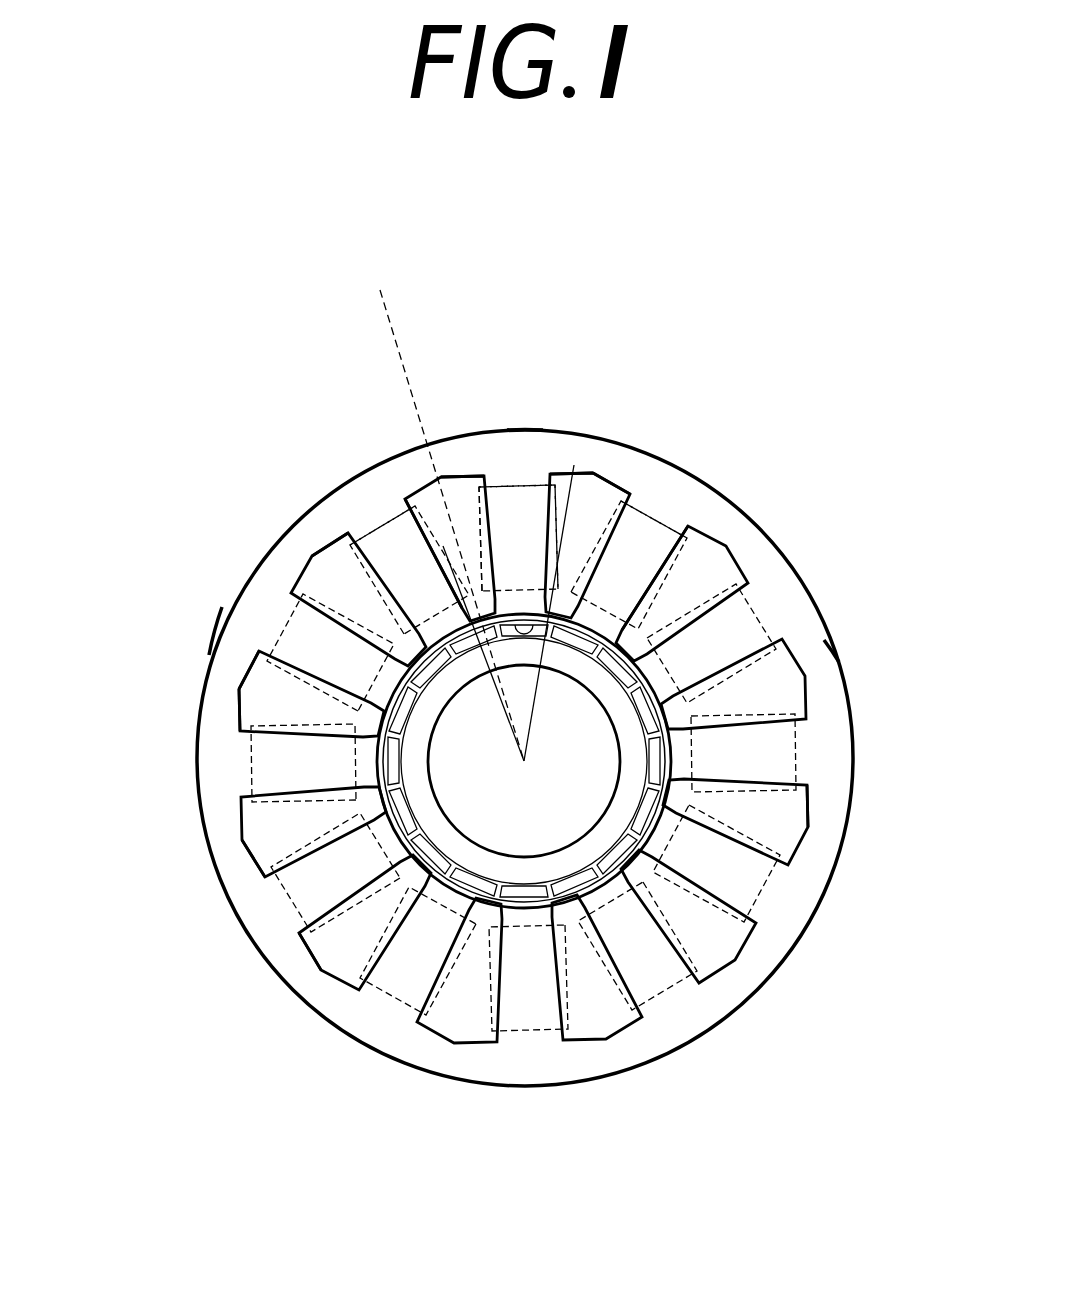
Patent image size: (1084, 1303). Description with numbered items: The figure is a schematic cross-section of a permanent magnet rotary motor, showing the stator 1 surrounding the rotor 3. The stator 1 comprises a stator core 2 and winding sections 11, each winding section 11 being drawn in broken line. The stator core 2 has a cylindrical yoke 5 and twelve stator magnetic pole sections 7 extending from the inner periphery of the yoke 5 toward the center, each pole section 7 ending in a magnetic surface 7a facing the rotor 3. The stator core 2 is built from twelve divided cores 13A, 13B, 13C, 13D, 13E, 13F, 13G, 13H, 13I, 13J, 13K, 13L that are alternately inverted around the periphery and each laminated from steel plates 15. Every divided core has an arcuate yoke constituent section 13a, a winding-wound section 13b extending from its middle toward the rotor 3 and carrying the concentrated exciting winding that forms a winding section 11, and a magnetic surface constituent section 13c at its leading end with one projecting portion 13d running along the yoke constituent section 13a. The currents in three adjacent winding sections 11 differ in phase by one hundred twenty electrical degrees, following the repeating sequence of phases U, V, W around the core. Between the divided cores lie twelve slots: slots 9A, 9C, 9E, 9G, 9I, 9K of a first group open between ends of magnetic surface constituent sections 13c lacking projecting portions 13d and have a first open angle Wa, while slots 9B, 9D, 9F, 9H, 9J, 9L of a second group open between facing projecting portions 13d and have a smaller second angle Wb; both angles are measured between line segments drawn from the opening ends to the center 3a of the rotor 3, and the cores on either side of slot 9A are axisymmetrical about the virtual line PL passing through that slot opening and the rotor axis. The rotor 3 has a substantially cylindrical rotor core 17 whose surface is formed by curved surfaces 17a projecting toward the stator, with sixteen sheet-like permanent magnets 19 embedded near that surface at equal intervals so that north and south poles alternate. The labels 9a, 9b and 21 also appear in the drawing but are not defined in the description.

The stator 1 is at (273, 560).
The stator core 2 is at (262, 533).
The rotor 3 is at (420, 752).
The center of the rotor 3a is at (262, 842).
The cylindrical yoke 5 is at (215, 662).
The stator magnetic pole section 7 is at (557, 500).
The magnetic surface 7a is at (620, 515).
The slot 9A is at (453, 497).
The slot 9B is at (313, 558).
The slot 9C is at (263, 708).
The slot 9D is at (248, 843).
The slot 9E is at (320, 968).
The slot 9F is at (430, 1020).
The slot 9G is at (581, 1020).
The slot 9H is at (712, 975).
The slot 9I is at (804, 832).
The slot 9J is at (783, 697).
The slot 9K is at (714, 582).
The slot 9L is at (650, 498).
The tooth side portion 9a is at (410, 590).
The tooth side portion 9b is at (672, 530).
The winding section 11 is at (465, 500).
The divided core 13A is at (524, 500).
The divided core 13B is at (363, 498).
The divided core 13C is at (298, 622).
The divided core 13D is at (263, 757).
The divided core 13E is at (282, 903).
The divided core 13F is at (394, 980).
The divided core 13G is at (517, 1022).
The divided core 13H is at (652, 1002).
The divided core 13I is at (775, 903).
The divided core 13J is at (774, 758).
The divided core 13K is at (765, 612).
The divided core 13L is at (640, 520).
The yoke constituent section 13a is at (531, 453).
The winding-wound section 13b is at (510, 500).
The magnetic surface constituent section 13c is at (605, 515).
The projecting portion 13d is at (630, 520).
The steel plate 15 is at (565, 485).
The rotor core 17 is at (285, 883).
The curved surface 17a is at (590, 505).
The permanent magnet 19 is at (250, 730).
The rotor 21 is at (440, 836).
The virtual line PL is at (378, 300).
The first angle Wa is at (529, 693).
The second angle Wb is at (535, 708).
The U phase U is at (512, 500).
The V phase V is at (343, 507).
The W phase W is at (768, 548).